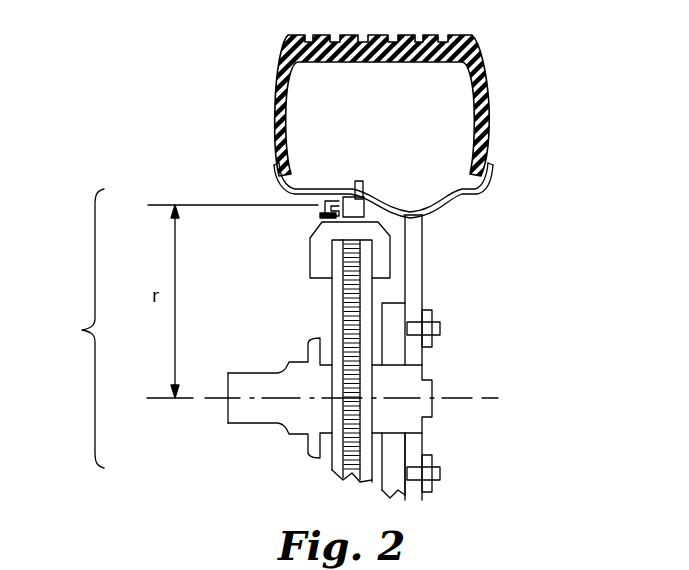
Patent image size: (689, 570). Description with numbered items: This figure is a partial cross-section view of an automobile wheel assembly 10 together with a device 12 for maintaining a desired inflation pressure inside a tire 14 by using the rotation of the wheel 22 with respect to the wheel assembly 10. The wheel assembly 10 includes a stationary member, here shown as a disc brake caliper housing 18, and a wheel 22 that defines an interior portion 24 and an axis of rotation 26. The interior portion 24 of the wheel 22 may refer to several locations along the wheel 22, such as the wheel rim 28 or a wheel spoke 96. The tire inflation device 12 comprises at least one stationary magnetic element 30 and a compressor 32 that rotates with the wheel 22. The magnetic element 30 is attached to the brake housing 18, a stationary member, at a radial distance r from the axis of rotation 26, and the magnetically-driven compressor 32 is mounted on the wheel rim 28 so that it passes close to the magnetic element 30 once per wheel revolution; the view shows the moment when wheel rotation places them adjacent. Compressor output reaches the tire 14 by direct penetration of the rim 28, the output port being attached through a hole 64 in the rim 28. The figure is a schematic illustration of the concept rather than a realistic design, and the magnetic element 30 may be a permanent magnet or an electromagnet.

The wheel assembly 10 is at (513, 53).
The tire inflation device 12 is at (360, 181).
The tire 14 is at (279, 92).
The disc brake caliper housing 18 is at (310, 255).
The wheel 22 is at (423, 230).
The interior portion 24 is at (236, 328).
The axis of rotation 26 is at (473, 397).
The wheel rim 28 is at (388, 191).
The magnetic element 30 is at (320, 210).
The compressor 32 is at (423, 215).
The hole 64 is at (356, 196).
The wheel spoke 96 is at (422, 277).